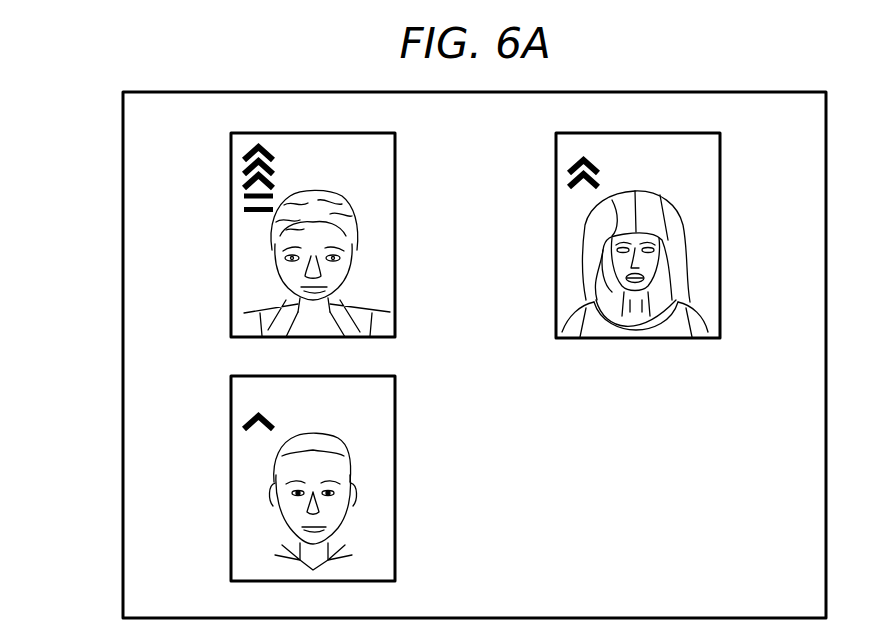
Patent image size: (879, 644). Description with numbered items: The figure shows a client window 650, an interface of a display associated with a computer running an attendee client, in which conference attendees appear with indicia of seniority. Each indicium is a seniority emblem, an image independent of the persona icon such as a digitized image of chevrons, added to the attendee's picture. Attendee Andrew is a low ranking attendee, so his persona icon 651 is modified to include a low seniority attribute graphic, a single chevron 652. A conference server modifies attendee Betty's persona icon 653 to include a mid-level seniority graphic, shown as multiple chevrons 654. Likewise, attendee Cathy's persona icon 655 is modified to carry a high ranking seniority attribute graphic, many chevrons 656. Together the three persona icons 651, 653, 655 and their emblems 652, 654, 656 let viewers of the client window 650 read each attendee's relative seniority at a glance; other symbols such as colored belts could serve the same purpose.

The client window 650 is at (425, 355).
The persona icon 651 is at (274, 478).
The chevron 652 is at (296, 410).
The persona icon 653 is at (676, 235).
The multiple chevrons 654 is at (621, 166).
The persona icon 655 is at (274, 235).
The many chevrons 656 is at (296, 178).